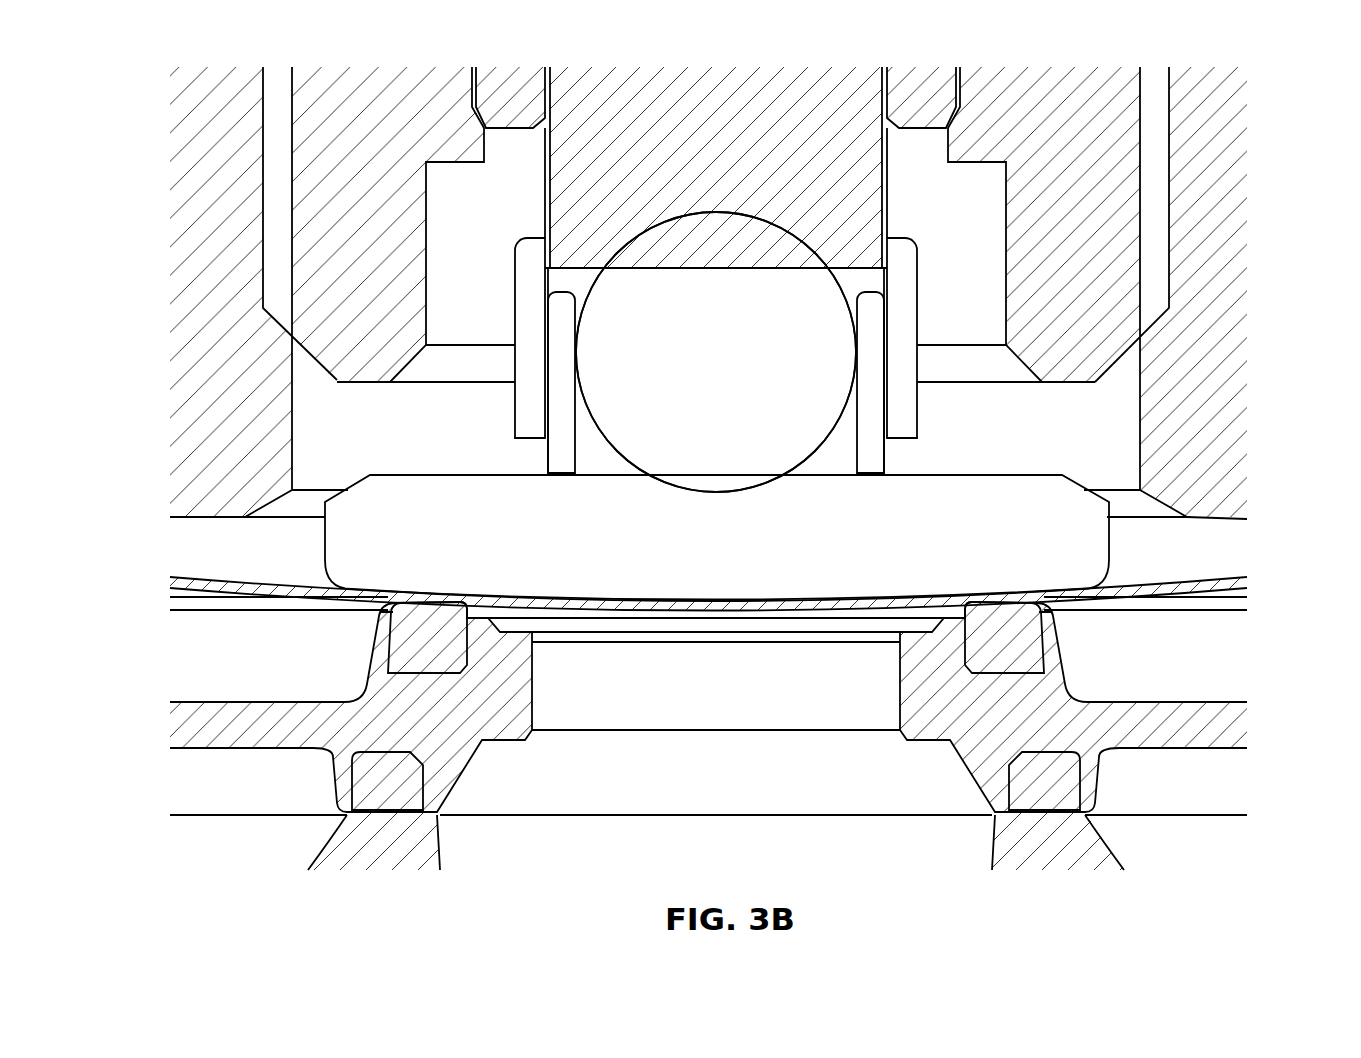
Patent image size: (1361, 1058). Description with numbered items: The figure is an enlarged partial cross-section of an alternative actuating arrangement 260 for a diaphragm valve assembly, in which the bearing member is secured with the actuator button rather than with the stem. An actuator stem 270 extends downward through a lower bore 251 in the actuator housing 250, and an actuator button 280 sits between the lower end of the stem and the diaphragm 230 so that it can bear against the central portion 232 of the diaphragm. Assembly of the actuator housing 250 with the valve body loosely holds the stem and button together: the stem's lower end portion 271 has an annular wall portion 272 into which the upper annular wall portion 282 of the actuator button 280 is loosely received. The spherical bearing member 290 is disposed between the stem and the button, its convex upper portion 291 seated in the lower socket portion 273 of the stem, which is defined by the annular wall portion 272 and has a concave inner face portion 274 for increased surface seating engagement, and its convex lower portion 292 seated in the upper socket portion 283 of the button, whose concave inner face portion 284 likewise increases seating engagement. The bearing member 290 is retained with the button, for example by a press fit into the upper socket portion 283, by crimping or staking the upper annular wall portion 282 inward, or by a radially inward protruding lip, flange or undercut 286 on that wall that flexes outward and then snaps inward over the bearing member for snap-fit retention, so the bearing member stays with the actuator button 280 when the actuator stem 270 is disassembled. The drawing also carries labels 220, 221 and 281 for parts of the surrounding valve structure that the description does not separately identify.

The lower housing seal lip 220 is at (437, 640).
The lower housing body 221 is at (1217, 728).
The diaphragm 230 is at (1160, 603).
The central portion of the diaphragm 232 is at (795, 610).
The actuator housing 250 is at (320, 131).
The lower bore 251 is at (428, 243).
The actuating arrangement 260 is at (943, 428).
The actuator stem 270 is at (812, 115).
The lower end portion 271 is at (915, 307).
The annular wall portion 272 is at (913, 280).
The lower socket portion 273 is at (542, 283).
The concave inner face portion 274 is at (713, 213).
The actuator button 280 is at (1068, 532).
The membrane center 281 is at (662, 603).
The upper annular wall portion 282 is at (557, 347).
The upper socket portion 283 is at (582, 447).
The concave inner face portion 284 is at (702, 495).
The radially inward protruding lip, flange or undercut 286 is at (872, 313).
The bearing member 290 is at (780, 283).
The upper portion of the bearing member 291 is at (673, 247).
The lower portion of the bearing member 292 is at (763, 470).